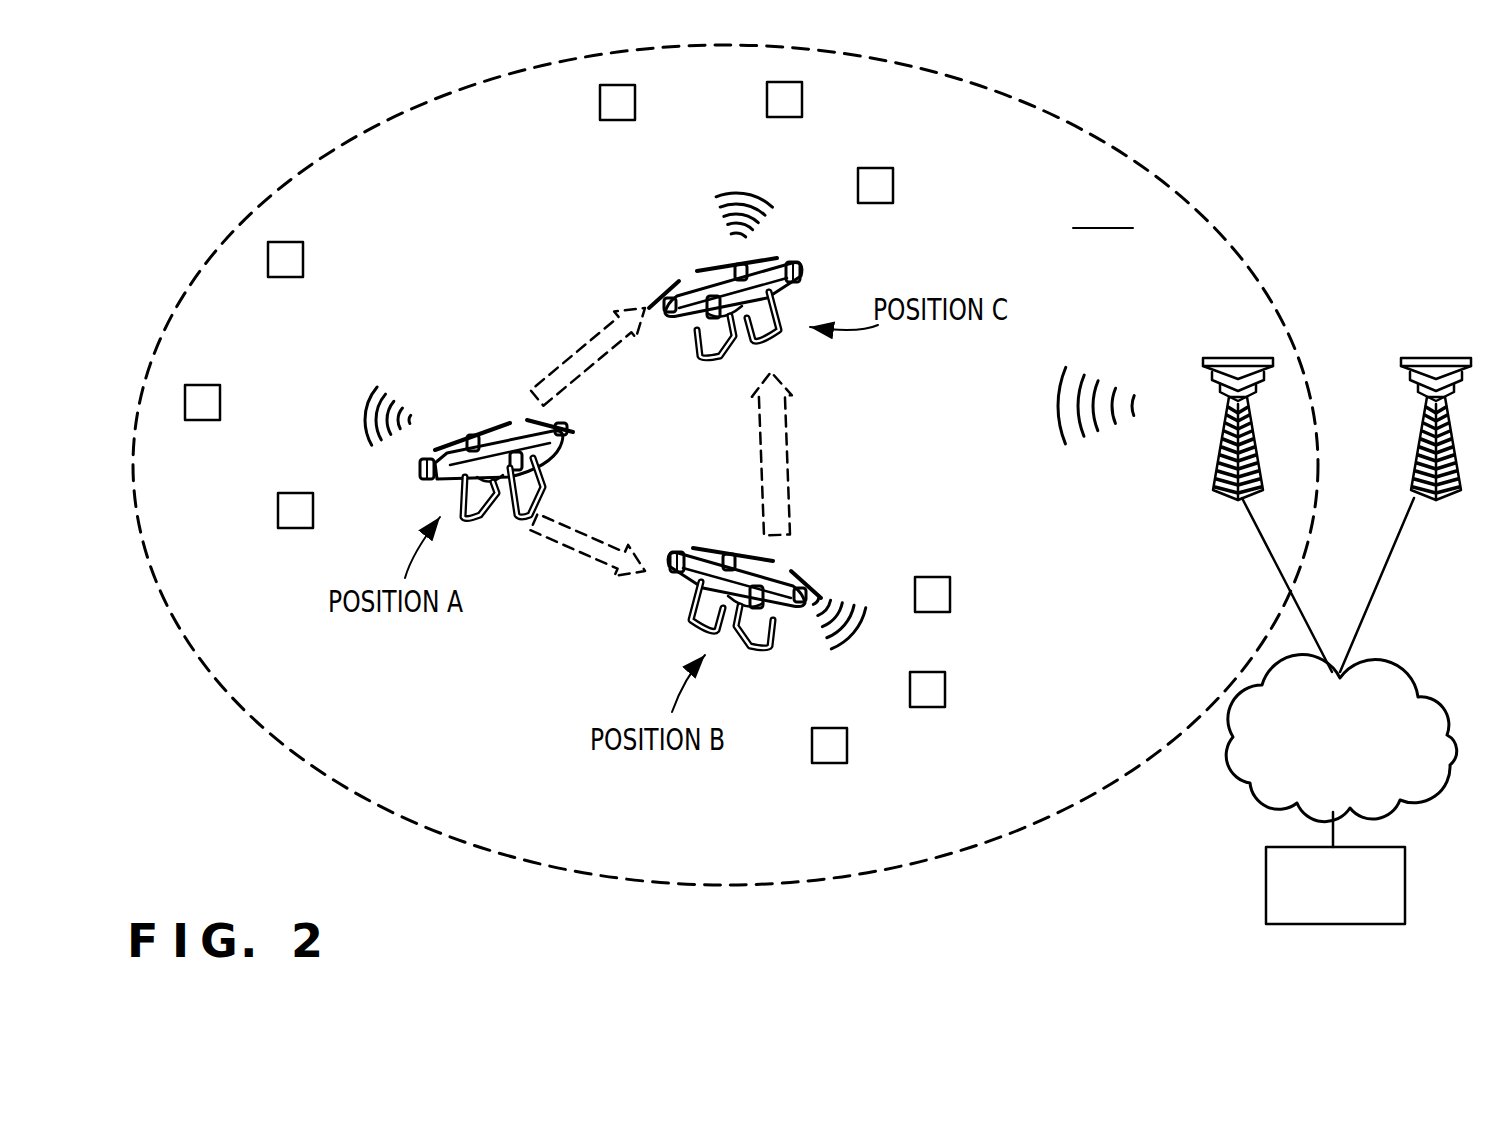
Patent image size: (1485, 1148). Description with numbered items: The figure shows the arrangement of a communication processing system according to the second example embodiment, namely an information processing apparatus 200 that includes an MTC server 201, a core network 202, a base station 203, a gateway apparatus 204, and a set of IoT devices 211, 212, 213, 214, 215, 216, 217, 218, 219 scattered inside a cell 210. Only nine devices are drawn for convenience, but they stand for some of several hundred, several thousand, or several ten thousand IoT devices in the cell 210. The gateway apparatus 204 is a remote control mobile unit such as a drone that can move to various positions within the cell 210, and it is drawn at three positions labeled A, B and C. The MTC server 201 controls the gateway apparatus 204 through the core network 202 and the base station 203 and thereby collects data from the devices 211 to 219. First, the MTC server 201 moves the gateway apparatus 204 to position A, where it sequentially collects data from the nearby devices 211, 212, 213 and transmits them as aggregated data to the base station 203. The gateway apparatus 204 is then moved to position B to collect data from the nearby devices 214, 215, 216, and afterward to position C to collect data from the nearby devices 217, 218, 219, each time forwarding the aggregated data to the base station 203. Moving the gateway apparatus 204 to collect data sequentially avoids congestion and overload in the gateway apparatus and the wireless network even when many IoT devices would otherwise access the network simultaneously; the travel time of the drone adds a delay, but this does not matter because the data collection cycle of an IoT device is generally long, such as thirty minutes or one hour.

The information processing apparatus 200 is at (220, 147).
The MTC server 201 is at (1266, 877).
The core network 202 is at (1377, 688).
The base station 203 is at (1214, 470).
The gateway apparatus 204 is at (468, 522).
The cell 210 is at (1120, 150).
The IoT device 211 is at (303, 259).
The IoT device 212 is at (220, 402).
The IoT device 213 is at (313, 510).
The IoT device 214 is at (847, 745).
The IoT device 215 is at (945, 689).
The IoT device 216 is at (950, 594).
The IoT device 217 is at (893, 185).
The IoT device 218 is at (802, 99).
The IoT device 219 is at (635, 102).